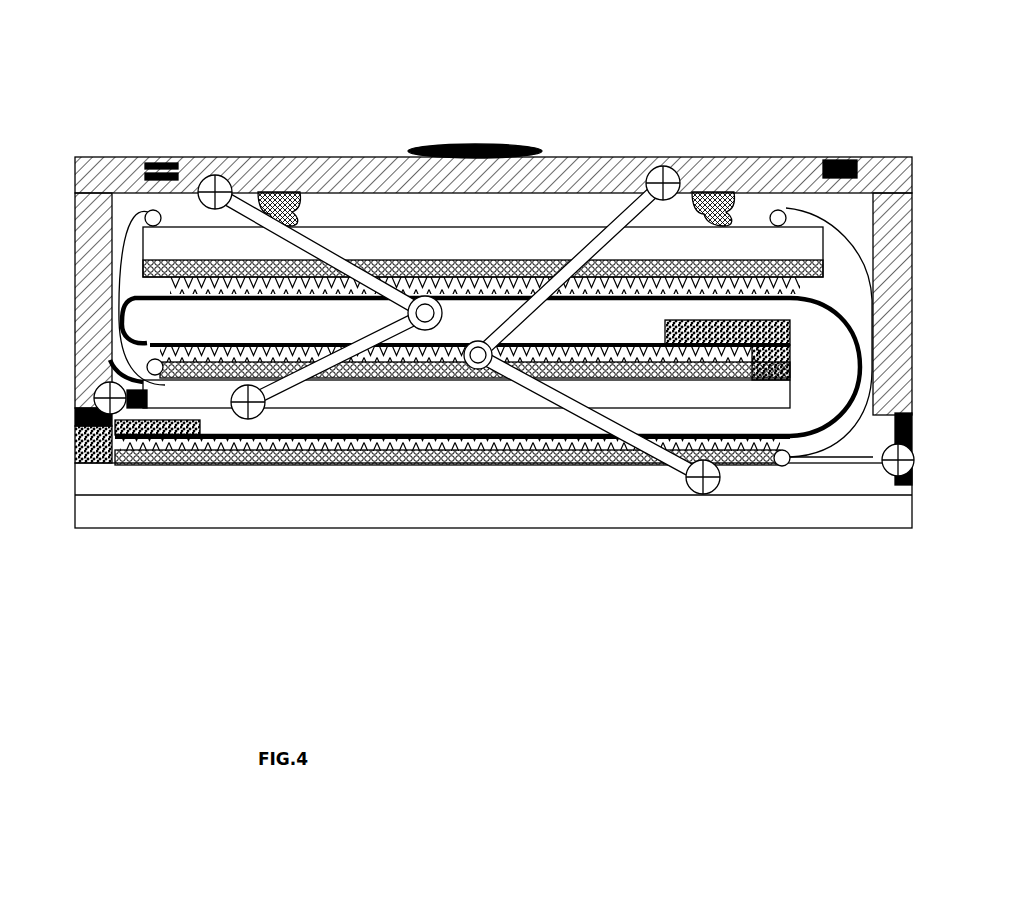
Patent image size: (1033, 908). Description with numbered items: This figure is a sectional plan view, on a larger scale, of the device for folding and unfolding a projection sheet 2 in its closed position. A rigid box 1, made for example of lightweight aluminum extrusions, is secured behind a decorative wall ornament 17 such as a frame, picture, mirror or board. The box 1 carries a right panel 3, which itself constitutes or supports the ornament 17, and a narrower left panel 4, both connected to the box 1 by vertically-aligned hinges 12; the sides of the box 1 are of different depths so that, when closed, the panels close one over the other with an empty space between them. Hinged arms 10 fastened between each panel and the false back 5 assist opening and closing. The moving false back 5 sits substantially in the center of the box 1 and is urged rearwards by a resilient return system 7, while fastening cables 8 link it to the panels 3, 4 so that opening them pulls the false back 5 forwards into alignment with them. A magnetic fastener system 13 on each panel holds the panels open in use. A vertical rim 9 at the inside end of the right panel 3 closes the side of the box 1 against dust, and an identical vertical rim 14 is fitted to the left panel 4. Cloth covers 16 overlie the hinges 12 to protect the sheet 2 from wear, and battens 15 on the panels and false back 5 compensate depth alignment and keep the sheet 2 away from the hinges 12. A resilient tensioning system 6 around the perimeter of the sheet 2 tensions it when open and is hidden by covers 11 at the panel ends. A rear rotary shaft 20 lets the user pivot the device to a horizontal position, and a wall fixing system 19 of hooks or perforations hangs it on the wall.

The rigid box 1 is at (336, 178).
The projection sheet 2 is at (609, 342).
The right panel 3 is at (545, 480).
The left panel 4 is at (374, 398).
The false back 5 is at (390, 252).
The resilient tensioning system 6 is at (283, 302).
The resilient return system 7 is at (285, 190).
The fastening cables 8 is at (143, 215).
The vertical rim 9 is at (76, 458).
The hinged arms 10 is at (352, 350).
The covers 11 is at (151, 440).
The hinges 12 is at (118, 440).
The magnetic fastener system 13 is at (108, 408).
The vertical rim 14 is at (770, 345).
The battens 15 is at (441, 282).
The cloth cover 16 is at (113, 345).
The decorative wall ornament 17 is at (581, 512).
The wall fixing system 19 is at (163, 162).
The rear rotary shaft 20 is at (475, 145).